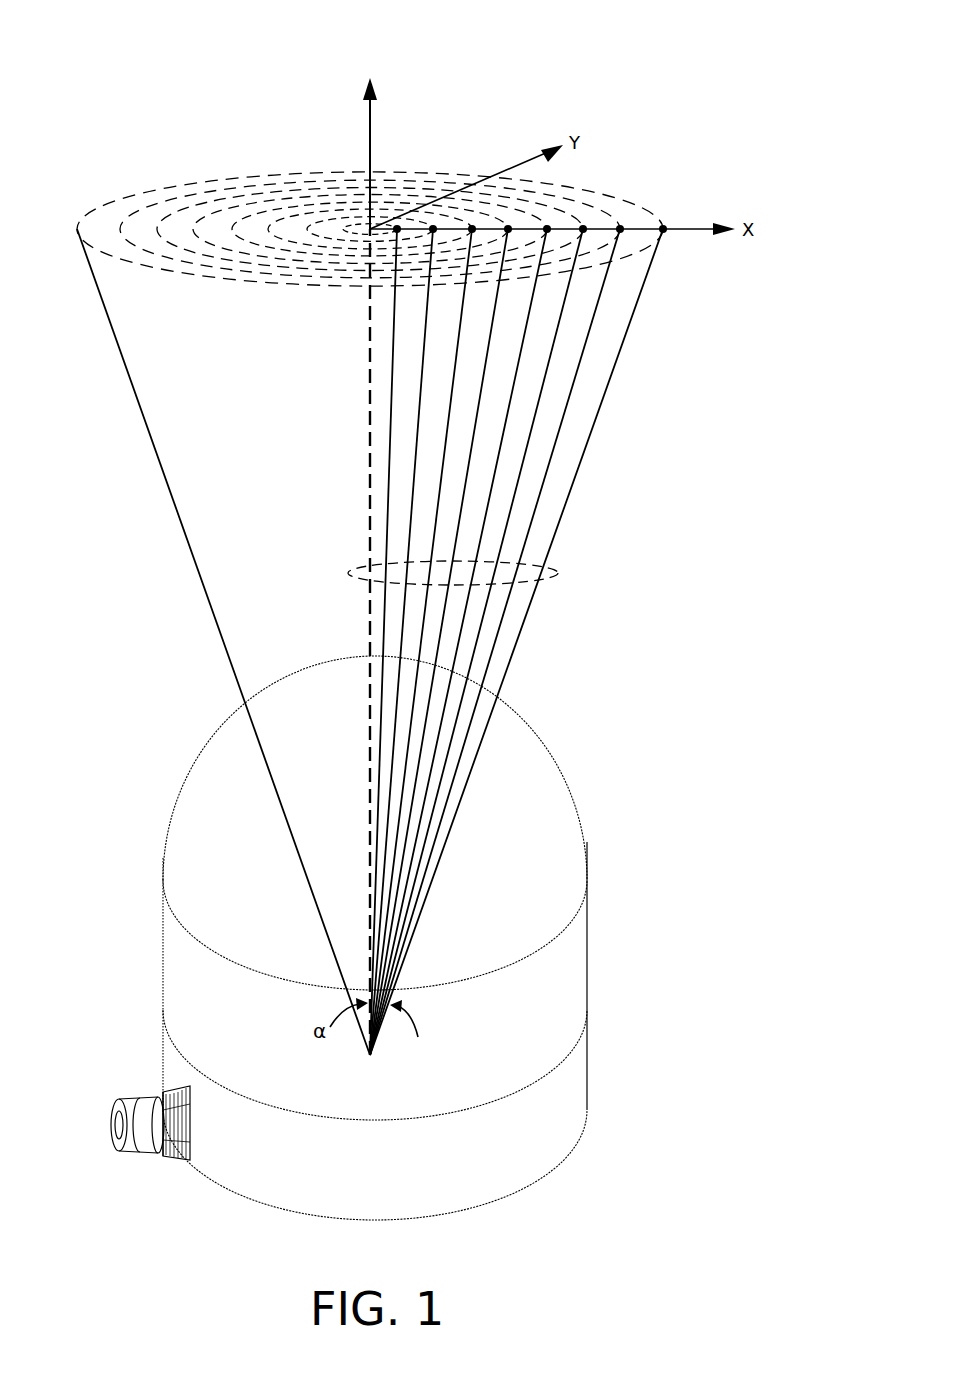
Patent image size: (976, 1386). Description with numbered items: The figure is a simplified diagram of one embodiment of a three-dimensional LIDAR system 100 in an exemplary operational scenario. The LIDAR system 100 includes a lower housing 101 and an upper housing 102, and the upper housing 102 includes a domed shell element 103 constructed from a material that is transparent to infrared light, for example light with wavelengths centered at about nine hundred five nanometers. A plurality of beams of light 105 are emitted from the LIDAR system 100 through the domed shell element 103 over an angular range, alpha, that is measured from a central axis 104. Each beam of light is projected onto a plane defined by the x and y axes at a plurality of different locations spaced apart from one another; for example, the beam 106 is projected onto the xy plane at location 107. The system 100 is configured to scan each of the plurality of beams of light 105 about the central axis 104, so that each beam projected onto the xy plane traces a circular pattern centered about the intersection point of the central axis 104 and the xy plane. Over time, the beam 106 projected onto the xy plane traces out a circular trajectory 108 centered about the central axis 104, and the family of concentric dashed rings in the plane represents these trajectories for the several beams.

The 3-D LIDAR system 100 is at (86, 70).
The lower housing 101 is at (588, 1075).
The upper housing 102 is at (600, 670).
The domed shell element 103 is at (521, 842).
The central axis 104 is at (368, 150).
The beams of light 105 is at (560, 573).
The beam 106 is at (622, 345).
The location 107 is at (668, 222).
The circular trajectory 108 is at (580, 190).